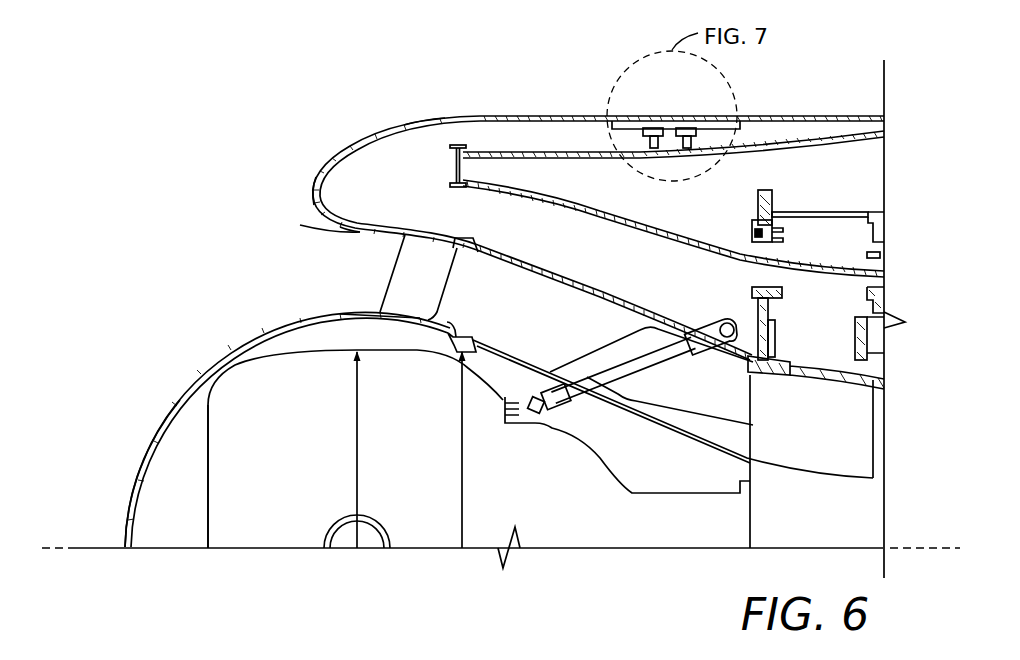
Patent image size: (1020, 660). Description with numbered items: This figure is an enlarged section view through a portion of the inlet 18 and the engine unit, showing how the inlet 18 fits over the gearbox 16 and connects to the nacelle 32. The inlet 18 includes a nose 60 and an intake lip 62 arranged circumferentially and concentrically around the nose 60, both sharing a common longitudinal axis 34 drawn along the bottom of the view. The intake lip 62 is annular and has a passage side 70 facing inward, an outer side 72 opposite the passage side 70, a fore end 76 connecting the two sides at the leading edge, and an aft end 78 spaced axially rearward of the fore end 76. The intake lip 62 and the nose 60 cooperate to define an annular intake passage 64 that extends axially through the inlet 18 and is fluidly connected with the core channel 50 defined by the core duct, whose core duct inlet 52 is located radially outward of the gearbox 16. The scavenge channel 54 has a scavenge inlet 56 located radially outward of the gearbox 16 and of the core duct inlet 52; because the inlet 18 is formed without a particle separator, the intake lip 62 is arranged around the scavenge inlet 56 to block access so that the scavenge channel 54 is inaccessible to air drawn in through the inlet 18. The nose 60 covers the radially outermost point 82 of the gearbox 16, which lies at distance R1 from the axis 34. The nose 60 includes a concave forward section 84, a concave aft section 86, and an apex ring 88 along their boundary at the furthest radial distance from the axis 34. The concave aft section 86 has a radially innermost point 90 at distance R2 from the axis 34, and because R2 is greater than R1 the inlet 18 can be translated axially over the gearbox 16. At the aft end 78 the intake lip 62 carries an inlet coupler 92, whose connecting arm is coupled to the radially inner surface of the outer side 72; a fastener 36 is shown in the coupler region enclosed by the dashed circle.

The gearbox 16 is at (240, 490).
The inlet 18 is at (498, 112).
The nacelle 32 is at (835, 114).
The longitudinal axis 34 is at (60, 553).
The fastener 36 is at (697, 110).
The core channel 50 is at (482, 298).
The core duct inlet 52 is at (337, 241).
The scavenge channel 54 is at (500, 176).
The scavenge inlet 56 is at (447, 175).
The nose 60 is at (177, 397).
The intake lip 62 is at (345, 148).
The annular intake passage 64 is at (240, 282).
The passage side 70 is at (368, 235).
The outer side 72 is at (424, 113).
The fore end 76 is at (307, 191).
The aft end 78 is at (638, 114).
The radially outermost point 82 is at (395, 318).
The concave forward section 84 is at (222, 357).
The concave aft section 86 is at (417, 319).
The apex ring 88 is at (352, 313).
The radially innermost point 90 is at (481, 339).
The inlet coupler 92 is at (633, 133).
The distance R1 is at (357, 445).
The distance R2 is at (460, 453).